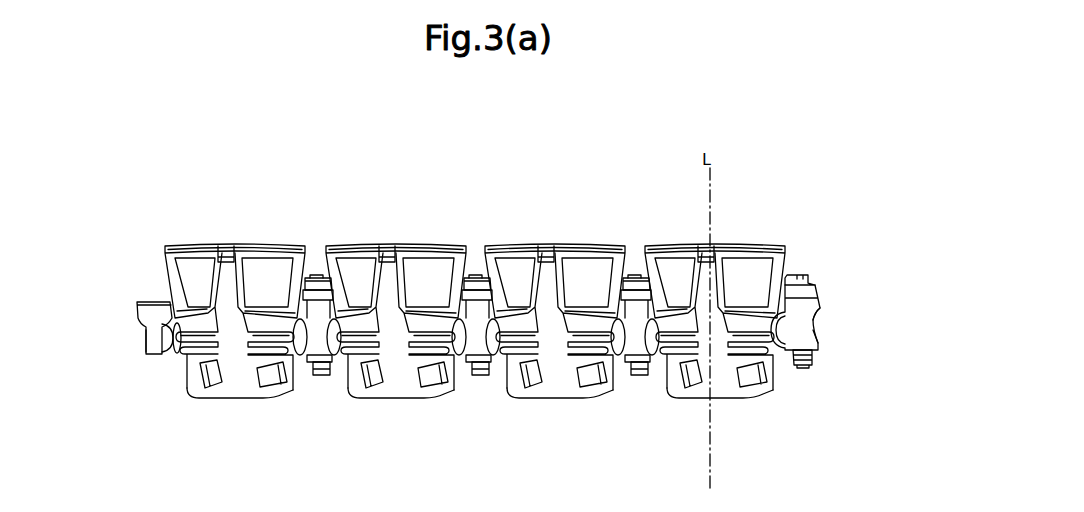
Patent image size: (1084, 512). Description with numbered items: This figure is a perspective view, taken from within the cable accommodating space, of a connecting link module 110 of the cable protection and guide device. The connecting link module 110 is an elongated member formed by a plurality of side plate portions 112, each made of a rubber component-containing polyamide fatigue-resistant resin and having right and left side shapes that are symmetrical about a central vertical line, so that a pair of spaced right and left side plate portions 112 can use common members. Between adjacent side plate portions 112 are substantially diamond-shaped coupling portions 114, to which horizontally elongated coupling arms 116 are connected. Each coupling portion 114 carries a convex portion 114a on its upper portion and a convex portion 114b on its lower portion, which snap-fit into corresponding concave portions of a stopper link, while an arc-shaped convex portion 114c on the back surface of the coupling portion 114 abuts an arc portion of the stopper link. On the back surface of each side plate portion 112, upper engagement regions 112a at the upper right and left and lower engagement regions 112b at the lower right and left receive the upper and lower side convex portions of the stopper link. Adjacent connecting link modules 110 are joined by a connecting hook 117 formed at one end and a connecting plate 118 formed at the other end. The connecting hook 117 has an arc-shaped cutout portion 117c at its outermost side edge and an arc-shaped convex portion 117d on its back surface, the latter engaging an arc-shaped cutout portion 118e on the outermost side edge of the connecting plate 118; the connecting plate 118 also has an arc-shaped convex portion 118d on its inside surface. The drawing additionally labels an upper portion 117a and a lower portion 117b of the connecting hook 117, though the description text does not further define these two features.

The connecting link module 110 is at (777, 401).
The side plate portion 112 is at (238, 382).
The upper engagement region 112a is at (513, 262).
The lower engagement region 112b is at (513, 384).
The coupling portion 114 is at (318, 376).
The convex portion 114a is at (318, 277).
The convex portion 114b is at (328, 374).
The arc-shaped convex portion 114c is at (639, 274).
The coupling arm 116 is at (384, 386).
The connecting hook 117 is at (827, 305).
The right end cap 117a is at (797, 275).
The right end foot 117b is at (805, 368).
The arc-shaped cutout portion 117c is at (815, 318).
The arc-shaped convex portion 117d is at (817, 340).
The connecting plate 118 is at (140, 343).
The arc-shaped convex portion 118d is at (167, 350).
The arc-shaped cutout portion 118e is at (143, 335).